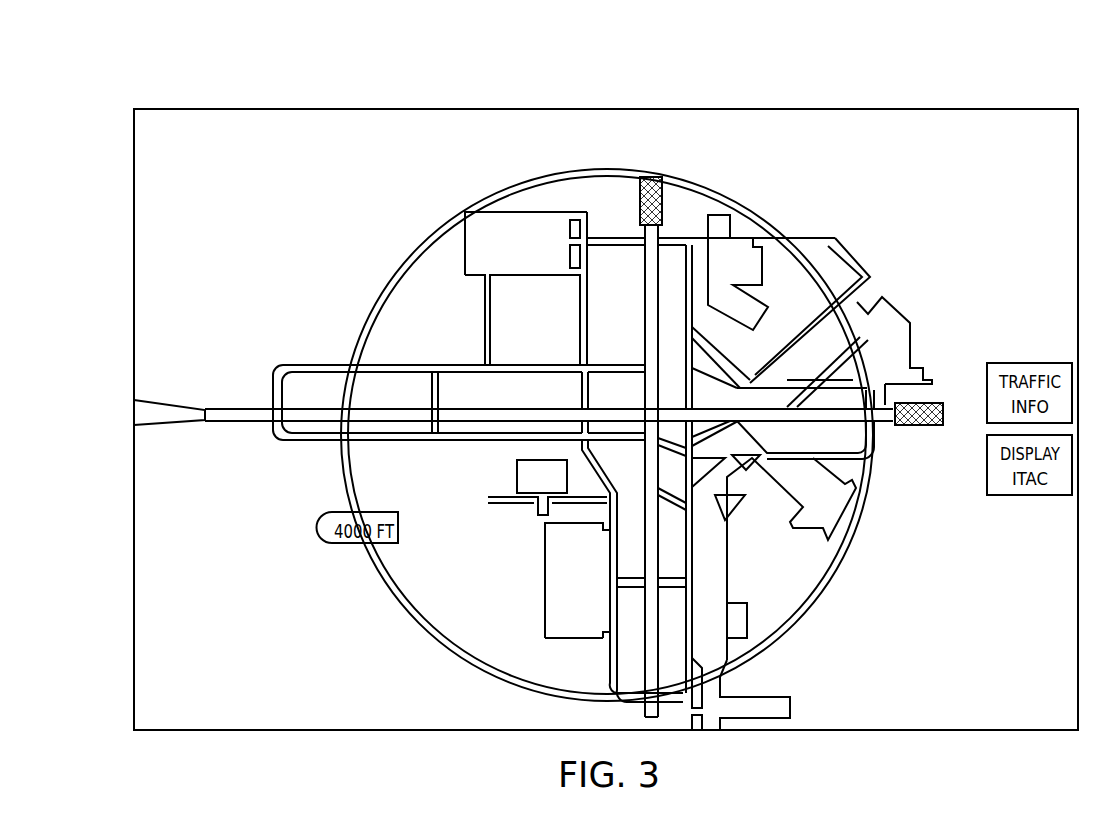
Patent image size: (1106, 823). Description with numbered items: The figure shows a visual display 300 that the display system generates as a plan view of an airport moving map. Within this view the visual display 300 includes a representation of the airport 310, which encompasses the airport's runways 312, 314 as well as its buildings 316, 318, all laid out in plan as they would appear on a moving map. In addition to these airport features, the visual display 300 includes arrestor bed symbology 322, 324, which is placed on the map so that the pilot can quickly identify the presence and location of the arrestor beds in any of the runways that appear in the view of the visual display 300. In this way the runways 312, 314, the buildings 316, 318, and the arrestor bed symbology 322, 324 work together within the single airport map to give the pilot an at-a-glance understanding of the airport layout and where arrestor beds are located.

The visual display 300 is at (606, 373).
The airport 310 is at (560, 435).
The runway 312 is at (218, 422).
The runway 314 is at (648, 651).
The building 316 is at (512, 218).
The building 318 is at (840, 505).
The arrestor bed symbology 322 is at (652, 183).
The arrestor bed symbology 324 is at (917, 420).